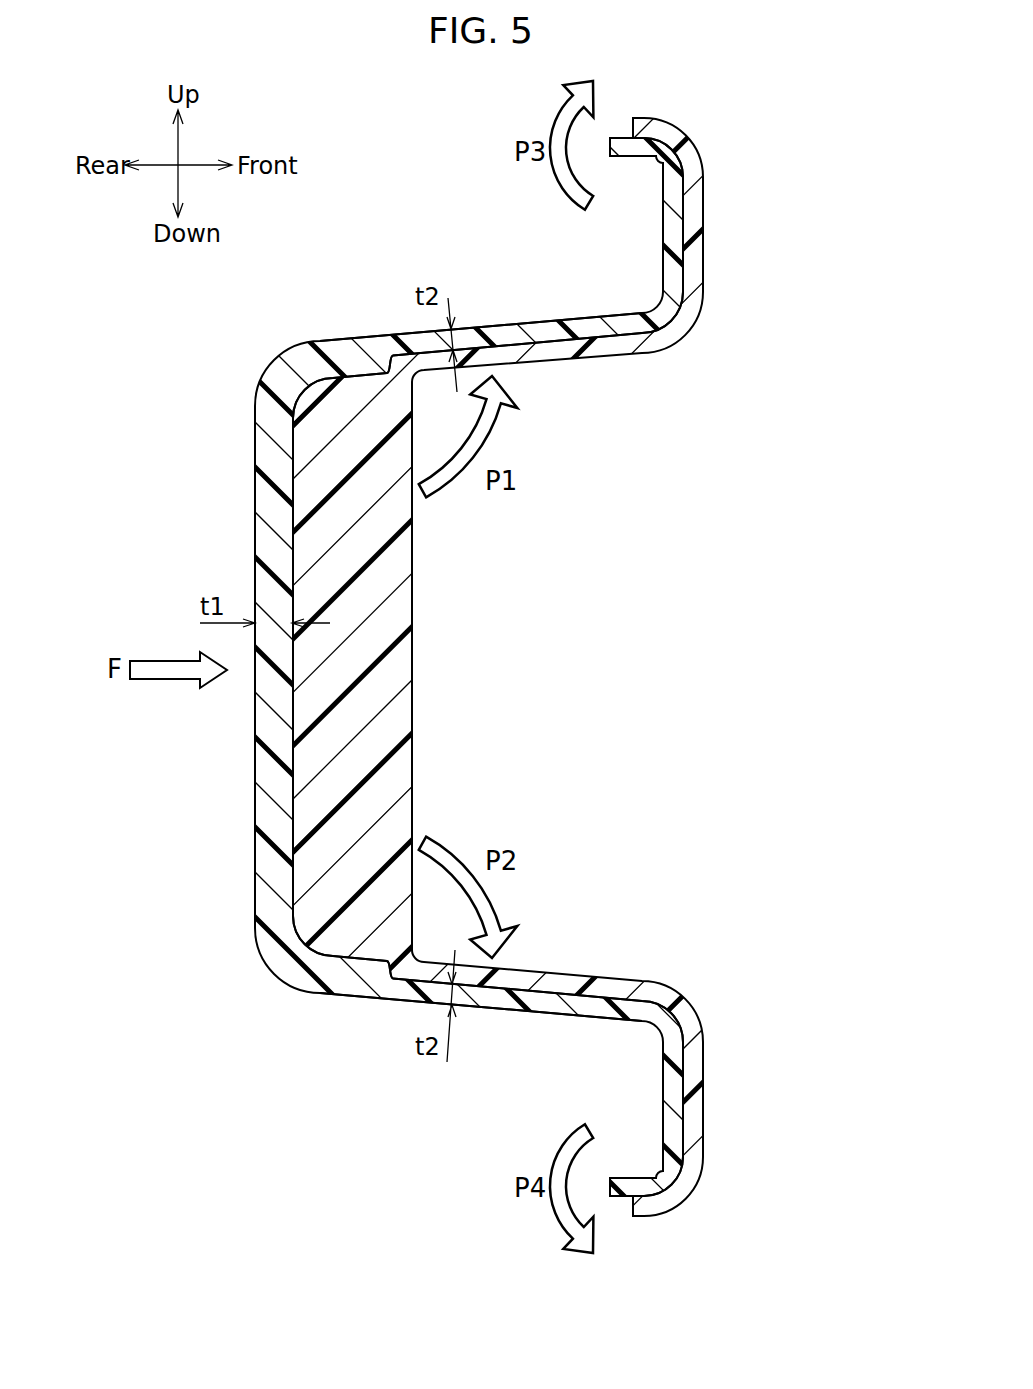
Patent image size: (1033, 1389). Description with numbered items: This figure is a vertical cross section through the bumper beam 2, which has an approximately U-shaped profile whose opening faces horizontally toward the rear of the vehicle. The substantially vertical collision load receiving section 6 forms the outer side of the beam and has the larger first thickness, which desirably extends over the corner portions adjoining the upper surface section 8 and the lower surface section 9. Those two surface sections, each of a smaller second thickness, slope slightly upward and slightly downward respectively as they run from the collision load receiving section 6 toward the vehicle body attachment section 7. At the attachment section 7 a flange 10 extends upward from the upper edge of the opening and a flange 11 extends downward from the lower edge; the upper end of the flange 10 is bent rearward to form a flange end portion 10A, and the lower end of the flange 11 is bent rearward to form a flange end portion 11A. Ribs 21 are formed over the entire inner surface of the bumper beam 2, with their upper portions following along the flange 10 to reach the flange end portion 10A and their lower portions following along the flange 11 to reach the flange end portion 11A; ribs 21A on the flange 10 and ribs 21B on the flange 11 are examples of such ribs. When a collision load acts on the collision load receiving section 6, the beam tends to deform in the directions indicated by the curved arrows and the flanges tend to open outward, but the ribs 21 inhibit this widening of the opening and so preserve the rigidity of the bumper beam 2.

The bumper beam 2 is at (193, 522).
The collision load receiving section 6 is at (255, 765).
The vehicle body attachment section 7 is at (711, 669).
The upper surface section 8 is at (497, 324).
The lower surface section 9 is at (497, 1010).
The flange 10 is at (663, 228).
The flange end portion 10A is at (622, 137).
The flange 11 is at (663, 1115).
The flange end portion 11A is at (622, 1198).
The ribs 21 is at (390, 607).
The ribs 21A is at (703, 210).
The ribs 21B is at (703, 1103).